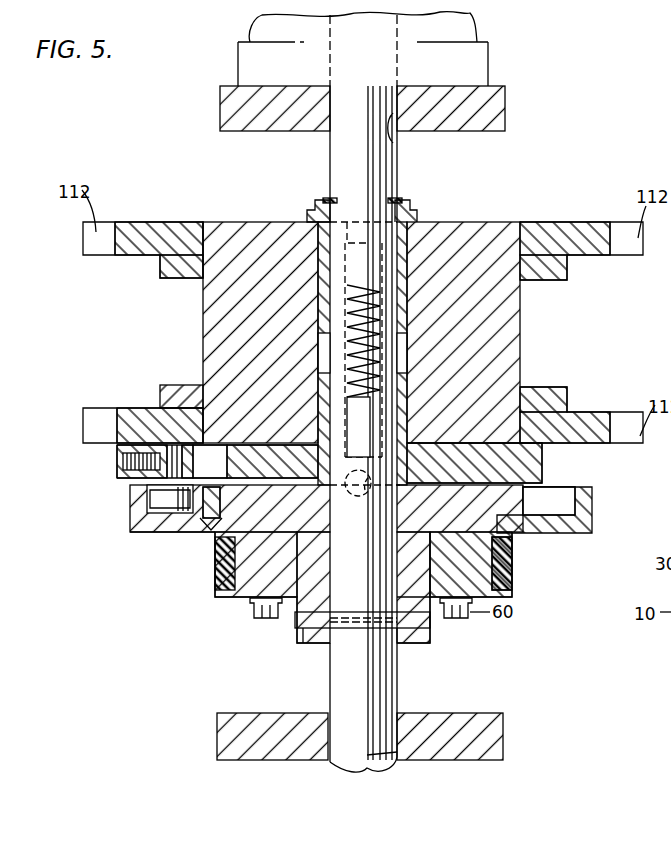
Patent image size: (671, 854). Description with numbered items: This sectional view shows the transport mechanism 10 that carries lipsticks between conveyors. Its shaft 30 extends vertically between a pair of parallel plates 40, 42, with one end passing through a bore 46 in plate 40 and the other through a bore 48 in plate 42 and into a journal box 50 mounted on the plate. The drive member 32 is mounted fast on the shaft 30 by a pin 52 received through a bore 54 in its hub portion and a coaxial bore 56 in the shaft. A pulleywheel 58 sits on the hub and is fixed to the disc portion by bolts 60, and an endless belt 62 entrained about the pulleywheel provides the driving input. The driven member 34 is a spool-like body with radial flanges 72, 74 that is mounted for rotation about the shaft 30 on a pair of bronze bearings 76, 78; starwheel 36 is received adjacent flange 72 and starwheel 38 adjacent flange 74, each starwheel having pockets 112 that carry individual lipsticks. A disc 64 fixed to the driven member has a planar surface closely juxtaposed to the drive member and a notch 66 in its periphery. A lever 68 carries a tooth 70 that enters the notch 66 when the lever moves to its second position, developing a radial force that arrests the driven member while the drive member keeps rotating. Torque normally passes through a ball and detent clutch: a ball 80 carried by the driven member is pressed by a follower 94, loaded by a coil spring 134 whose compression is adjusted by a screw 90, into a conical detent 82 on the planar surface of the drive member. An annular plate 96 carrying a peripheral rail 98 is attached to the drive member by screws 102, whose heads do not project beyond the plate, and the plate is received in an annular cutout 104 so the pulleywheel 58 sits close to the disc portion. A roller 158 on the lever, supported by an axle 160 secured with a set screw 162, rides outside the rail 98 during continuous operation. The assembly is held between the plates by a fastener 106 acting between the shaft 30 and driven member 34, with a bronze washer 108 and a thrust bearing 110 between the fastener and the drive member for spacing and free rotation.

The transport mechanism 10 is at (546, 589).
The shaft 30 is at (386, 697).
The drive member 32 is at (305, 596).
The driven member 34 is at (508, 366).
The starwheel 36 is at (555, 240).
The starwheel 38 is at (580, 420).
The plate 40 is at (304, 760).
The plate 42 is at (245, 128).
The bore 46 is at (394, 757).
The bore 48 is at (392, 130).
The journal box 50 is at (485, 65).
The pin 52 is at (428, 624).
The bore 54 is at (318, 630).
The bore 56 is at (385, 628).
The pulleywheel 58 is at (236, 590).
The bolt 60 is at (264, 618).
The endless belt 62 is at (512, 572).
The disc 64 is at (530, 466).
The notch 66 is at (227, 440).
The lever 68 is at (160, 470).
The tooth 70 is at (228, 452).
The flange 72 is at (172, 273).
The flange 74 is at (165, 405).
The bearing 76 is at (306, 230).
The bearing 78 is at (405, 440).
The ball 80 is at (356, 486).
The detent 82 is at (368, 492).
The screw 90 is at (410, 233).
The follower 94 is at (400, 412).
The plate 96 is at (180, 534).
The rail 98 is at (138, 521).
The screw 102 is at (211, 522).
The annular cutout 104 is at (578, 495).
The fastener 106 is at (333, 197).
The washer 108 is at (407, 220).
The bearing 110 is at (395, 199).
The pocket 112 is at (92, 428).
The spring 134 is at (410, 341).
The roller 158 is at (165, 500).
The axle 160 is at (160, 490).
The set screw 162 is at (120, 465).